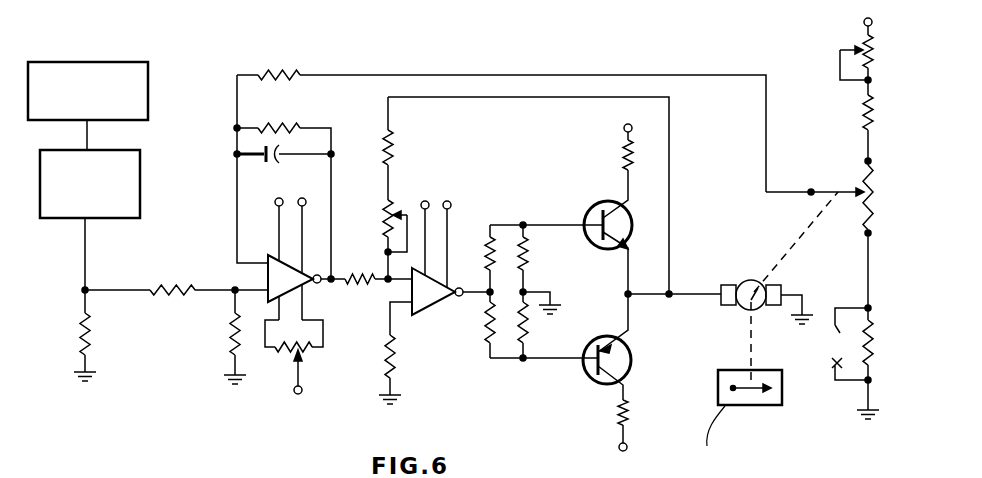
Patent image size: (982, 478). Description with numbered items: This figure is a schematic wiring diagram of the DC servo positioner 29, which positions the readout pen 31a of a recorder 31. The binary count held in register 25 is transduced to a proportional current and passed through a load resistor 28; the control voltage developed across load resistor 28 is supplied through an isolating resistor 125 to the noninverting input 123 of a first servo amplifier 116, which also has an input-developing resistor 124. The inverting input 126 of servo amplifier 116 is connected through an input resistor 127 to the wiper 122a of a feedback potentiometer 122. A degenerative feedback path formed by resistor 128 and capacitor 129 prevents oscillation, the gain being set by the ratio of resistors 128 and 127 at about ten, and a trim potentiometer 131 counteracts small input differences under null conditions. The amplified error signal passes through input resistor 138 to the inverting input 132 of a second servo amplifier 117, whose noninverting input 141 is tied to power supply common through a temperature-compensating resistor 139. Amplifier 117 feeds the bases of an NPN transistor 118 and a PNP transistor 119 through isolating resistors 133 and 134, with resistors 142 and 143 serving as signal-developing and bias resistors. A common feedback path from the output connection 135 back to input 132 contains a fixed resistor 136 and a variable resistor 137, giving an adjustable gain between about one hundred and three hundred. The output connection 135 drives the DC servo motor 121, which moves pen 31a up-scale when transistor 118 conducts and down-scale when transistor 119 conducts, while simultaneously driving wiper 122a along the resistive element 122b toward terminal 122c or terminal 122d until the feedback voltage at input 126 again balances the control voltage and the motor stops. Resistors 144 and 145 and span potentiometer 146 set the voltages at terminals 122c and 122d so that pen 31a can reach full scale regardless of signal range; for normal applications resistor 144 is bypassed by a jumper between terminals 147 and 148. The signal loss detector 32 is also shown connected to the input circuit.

The register 25 is at (150, 100).
The signal loss detector 32 is at (142, 205).
The load resistor 28 is at (93, 340).
The isolating resistor 125 is at (165, 285).
The noninverting input 123 is at (246, 287).
The input-developing resistor 124 is at (228, 328).
The inverting input 126 is at (252, 272).
The servo amplifier 116 is at (290, 266).
The trim potentiometer 131 is at (310, 352).
The input resistor 127 is at (284, 72).
The feedback resistor 128 is at (282, 126).
The capacitor 129 is at (262, 152).
The fixed feedback resistor 136 is at (393, 152).
The variable feedback resistor 137 is at (386, 210).
The input resistor 138 is at (366, 273).
The inverting input 132 is at (392, 284).
The second servo amplifier 117 is at (440, 302).
The noninverting input 141 is at (396, 311).
The temperature-compensating resistor 139 is at (393, 360).
The isolating resistor 133 is at (491, 235).
The signal-developing and bias resistor 142 is at (528, 262).
The isolating resistor 134 is at (484, 325).
The signal-developing and bias resistor 143 is at (529, 322).
The NPN transistor 118 is at (590, 208).
The PNP transistor 119 is at (590, 376).
The output connection 135 is at (648, 297).
The DC servo motor 121 is at (750, 281).
The recorder 31 is at (784, 402).
The pen 31a is at (733, 386).
The span potentiometer 146 is at (855, 48).
The resistor 145 is at (862, 92).
The feedback potentiometer 122 is at (847, 173).
The wiper 122a is at (852, 190).
The resistive element 122b is at (861, 208).
The terminal 122c is at (865, 158).
The terminal 122d is at (866, 236).
The zero-suppression resistor 144 is at (862, 338).
The terminal 148 is at (836, 328).
The terminal 147 is at (835, 372).
The DC positioner 29 is at (494, 416).